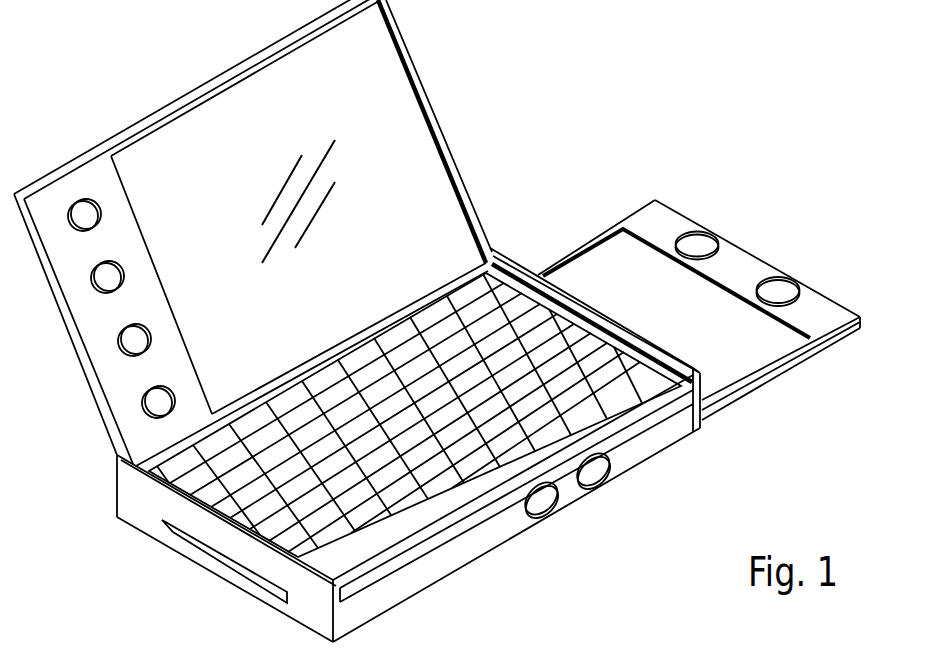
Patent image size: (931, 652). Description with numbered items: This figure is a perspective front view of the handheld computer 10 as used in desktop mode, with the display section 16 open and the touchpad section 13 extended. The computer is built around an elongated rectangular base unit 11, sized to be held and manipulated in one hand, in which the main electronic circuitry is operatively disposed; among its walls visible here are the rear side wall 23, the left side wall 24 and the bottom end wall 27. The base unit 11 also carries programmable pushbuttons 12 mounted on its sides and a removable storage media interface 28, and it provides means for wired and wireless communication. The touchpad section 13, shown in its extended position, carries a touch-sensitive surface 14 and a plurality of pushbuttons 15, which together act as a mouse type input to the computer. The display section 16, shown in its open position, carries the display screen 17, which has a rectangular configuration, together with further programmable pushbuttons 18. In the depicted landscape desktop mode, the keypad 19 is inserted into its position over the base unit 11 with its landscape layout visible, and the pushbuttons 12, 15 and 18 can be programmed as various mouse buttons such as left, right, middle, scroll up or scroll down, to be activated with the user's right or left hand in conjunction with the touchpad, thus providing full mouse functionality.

The handheld computer 10 is at (191, 587).
The base unit 11 is at (440, 580).
The programmable pushbuttons 12 is at (593, 475).
The touchpad section 13 is at (597, 232).
The touch-sensitive surface 14 is at (730, 342).
The pushbuttons 15 is at (780, 293).
The display section 16 is at (257, 55).
The display screen 17 is at (411, 128).
The programmable pushbuttons 18 is at (127, 344).
The keypad 19 is at (410, 562).
The rear side wall 23 is at (598, 408).
The left side wall 24 is at (463, 543).
The bottom end wall 27 is at (133, 513).
The removable storage media interface 28 is at (197, 540).